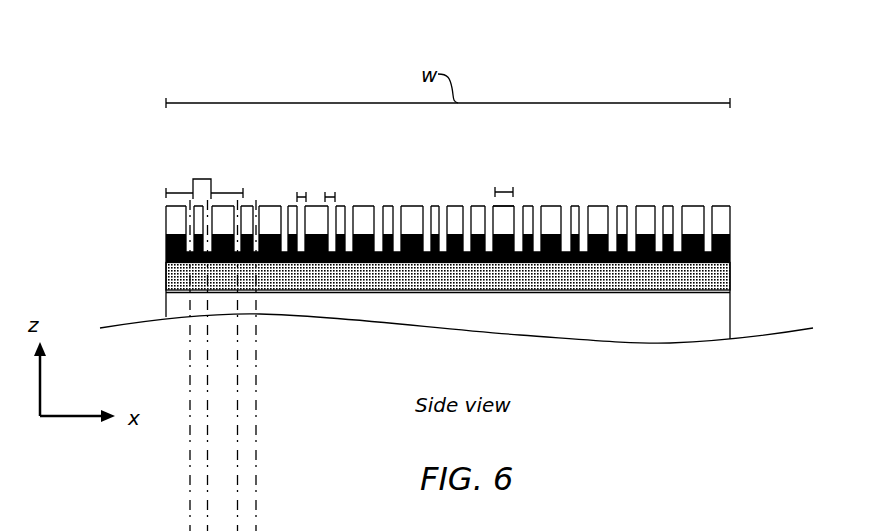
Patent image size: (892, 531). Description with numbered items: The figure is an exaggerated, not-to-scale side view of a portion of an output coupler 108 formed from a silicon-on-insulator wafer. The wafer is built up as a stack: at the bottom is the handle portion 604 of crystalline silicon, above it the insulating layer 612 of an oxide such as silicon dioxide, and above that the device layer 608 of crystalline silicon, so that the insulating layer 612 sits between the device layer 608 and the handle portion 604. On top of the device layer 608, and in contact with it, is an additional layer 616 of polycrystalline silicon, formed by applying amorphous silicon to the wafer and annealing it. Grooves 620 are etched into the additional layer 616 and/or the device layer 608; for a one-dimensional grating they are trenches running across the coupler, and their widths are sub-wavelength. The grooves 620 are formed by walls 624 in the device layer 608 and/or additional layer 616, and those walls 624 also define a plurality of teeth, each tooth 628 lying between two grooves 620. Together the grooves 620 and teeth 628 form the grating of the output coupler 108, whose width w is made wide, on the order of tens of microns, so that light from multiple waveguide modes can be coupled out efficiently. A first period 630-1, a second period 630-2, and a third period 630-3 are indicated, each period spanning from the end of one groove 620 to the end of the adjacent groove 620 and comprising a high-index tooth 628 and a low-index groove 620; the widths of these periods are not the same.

The output coupler 108 is at (150, 59).
The handle portion 604 is at (726, 330).
The device layer 608 is at (730, 255).
The insulating layer 612 is at (730, 280).
The additional layer 616 is at (730, 215).
The grooves 620 is at (330, 196).
The walls 624 is at (468, 208).
The tooth 628 is at (502, 188).
The first period 630-1 is at (180, 191).
The second period 630-2 is at (201, 178).
The third period 630-3 is at (224, 191).